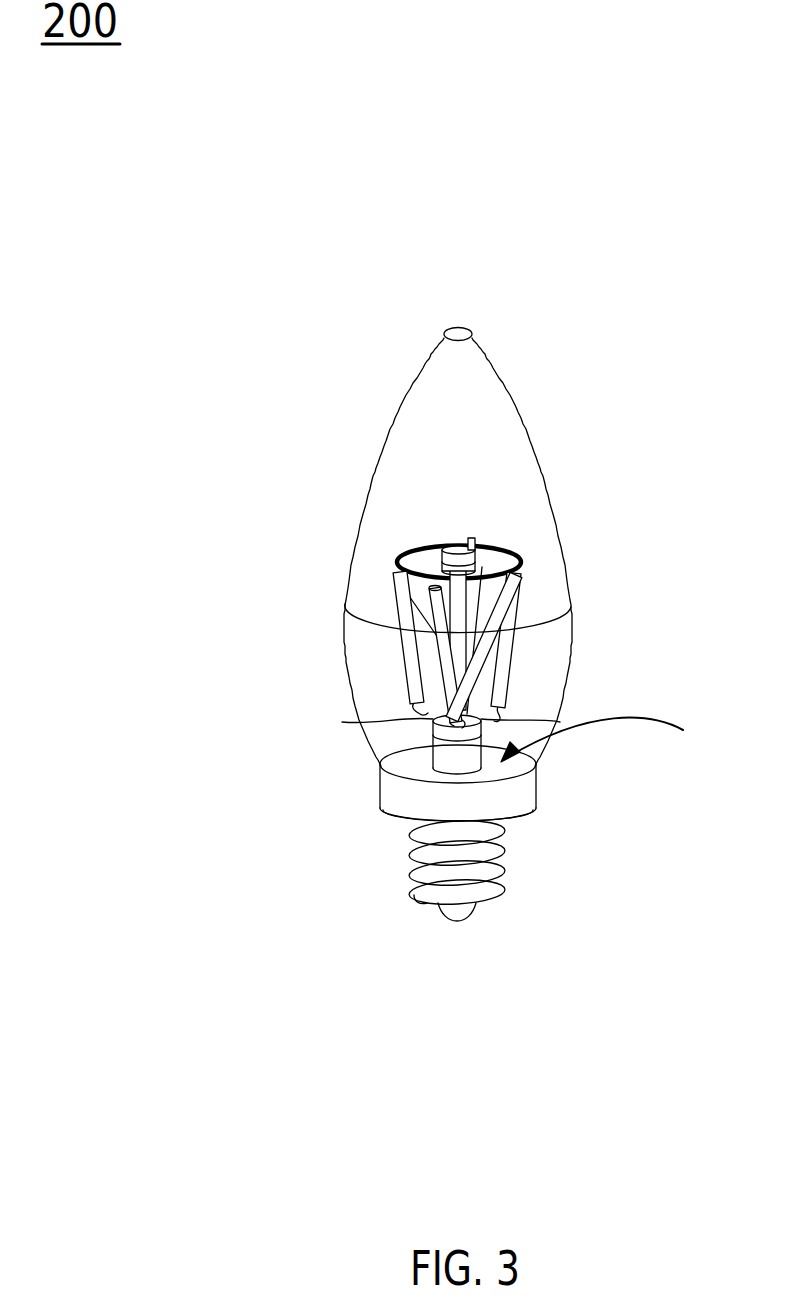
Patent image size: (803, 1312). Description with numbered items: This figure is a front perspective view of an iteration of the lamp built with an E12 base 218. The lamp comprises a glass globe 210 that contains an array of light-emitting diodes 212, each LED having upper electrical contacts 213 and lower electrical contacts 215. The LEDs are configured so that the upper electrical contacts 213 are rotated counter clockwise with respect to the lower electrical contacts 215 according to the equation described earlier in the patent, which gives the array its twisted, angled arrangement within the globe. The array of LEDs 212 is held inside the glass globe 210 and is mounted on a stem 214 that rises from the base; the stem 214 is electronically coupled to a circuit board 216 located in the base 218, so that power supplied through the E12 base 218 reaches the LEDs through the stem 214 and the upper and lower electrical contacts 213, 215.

The glass globe 210 is at (403, 430).
The array of light-emitting diodes 212 is at (412, 620).
The upper electrical contacts 213 is at (397, 555).
The stem 214 is at (457, 755).
The lower electrical contacts 215 is at (420, 721).
The circuit board 216 is at (614, 740).
The E12 base 218 is at (425, 897).